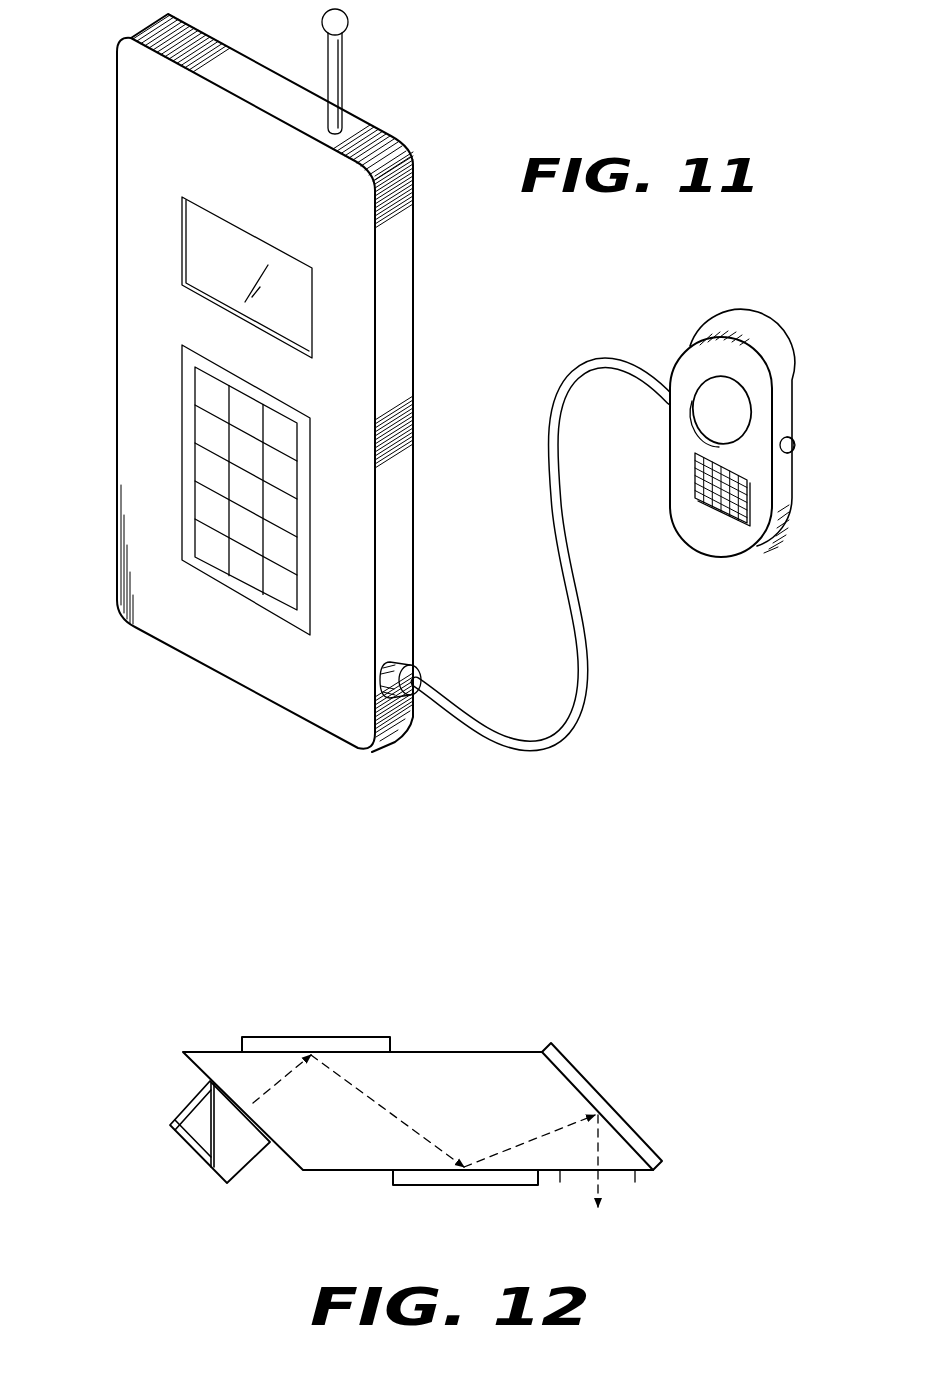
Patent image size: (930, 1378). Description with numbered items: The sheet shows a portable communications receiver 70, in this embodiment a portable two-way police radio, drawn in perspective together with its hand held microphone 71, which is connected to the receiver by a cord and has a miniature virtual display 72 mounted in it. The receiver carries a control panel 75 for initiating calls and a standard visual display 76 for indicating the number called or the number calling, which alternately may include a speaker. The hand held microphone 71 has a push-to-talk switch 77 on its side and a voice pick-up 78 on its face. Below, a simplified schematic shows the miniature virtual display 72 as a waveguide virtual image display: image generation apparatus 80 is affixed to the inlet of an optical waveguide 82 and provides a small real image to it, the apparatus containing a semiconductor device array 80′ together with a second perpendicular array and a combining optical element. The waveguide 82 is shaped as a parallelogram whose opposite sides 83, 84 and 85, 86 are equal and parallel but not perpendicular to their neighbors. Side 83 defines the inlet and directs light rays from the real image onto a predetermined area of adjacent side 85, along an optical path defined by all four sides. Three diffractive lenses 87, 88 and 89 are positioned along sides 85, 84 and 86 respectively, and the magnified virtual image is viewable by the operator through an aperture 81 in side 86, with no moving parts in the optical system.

In FIG. 11, the portable communications receiver 70 is at (129, 122).
In FIG. 11, the hand held microphone 71 is at (782, 482).
In FIG. 11, the miniature virtual display 72 is at (730, 403).
In FIG. 12, the miniature virtual display 72 is at (690, 1306).
In FIG. 11, the control panel 75 is at (269, 412).
In FIG. 11, the visual display 76 is at (239, 233).
In FIG. 11, the push-to-talk switch 77 is at (795, 447).
In FIG. 11, the voice pick-up 78 is at (740, 521).
In FIG. 12, the image generation apparatus 80 is at (138, 1140).
In FIG. 12, the semiconductor device array 80′ is at (183, 1153).
In FIG. 12, the aperture 81 is at (628, 1202).
In FIG. 12, the optical waveguide 82 is at (527, 1099).
In FIG. 12, the side of waveguide 83 is at (197, 1066).
In FIG. 12, the side of waveguide 84 is at (655, 1168).
In FIG. 12, the side of waveguide 85 is at (472, 1050).
In FIG. 12, the side of waveguide 86 is at (351, 1172).
In FIG. 12, the diffractive lens 87 is at (292, 1037).
In FIG. 12, the diffractive lens 88 is at (625, 1112).
In FIG. 12, the diffractive lens 89 is at (446, 1188).